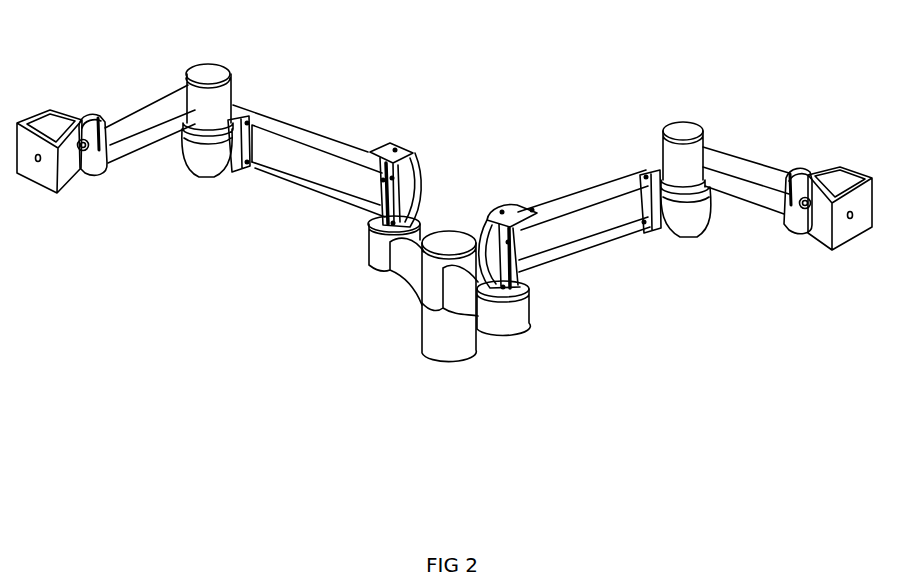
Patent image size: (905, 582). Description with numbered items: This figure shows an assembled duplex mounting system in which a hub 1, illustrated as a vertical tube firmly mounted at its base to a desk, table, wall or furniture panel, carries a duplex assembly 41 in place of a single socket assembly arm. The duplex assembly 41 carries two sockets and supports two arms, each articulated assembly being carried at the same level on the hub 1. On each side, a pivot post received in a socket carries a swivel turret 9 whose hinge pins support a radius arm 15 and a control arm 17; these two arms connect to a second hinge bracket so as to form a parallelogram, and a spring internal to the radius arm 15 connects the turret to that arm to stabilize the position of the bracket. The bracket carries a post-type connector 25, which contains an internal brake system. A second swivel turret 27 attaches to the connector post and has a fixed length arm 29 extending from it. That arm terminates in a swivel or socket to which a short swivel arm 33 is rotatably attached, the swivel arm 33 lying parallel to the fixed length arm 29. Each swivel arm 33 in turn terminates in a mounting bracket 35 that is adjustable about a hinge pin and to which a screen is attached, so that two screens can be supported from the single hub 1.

The hub 1 is at (438, 347).
The swivel turret 9 is at (403, 147).
The radius arm 15 is at (298, 137).
The control arm 17 is at (302, 188).
The connector 25 is at (207, 170).
The swivel turret 27 is at (212, 68).
The fixed length arm 29 is at (148, 113).
The short swivel arm 33 is at (97, 114).
The mounting bracket 35 is at (64, 180).
The duplex assembly 41 is at (380, 253).